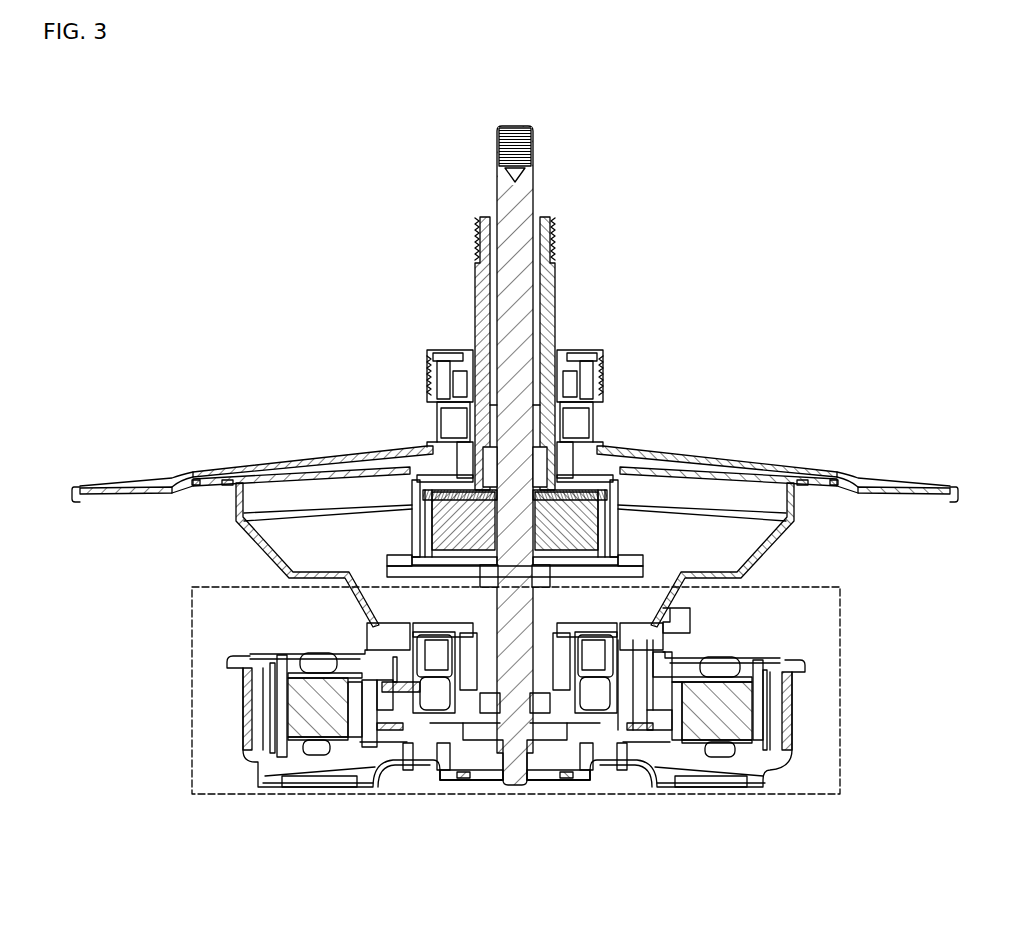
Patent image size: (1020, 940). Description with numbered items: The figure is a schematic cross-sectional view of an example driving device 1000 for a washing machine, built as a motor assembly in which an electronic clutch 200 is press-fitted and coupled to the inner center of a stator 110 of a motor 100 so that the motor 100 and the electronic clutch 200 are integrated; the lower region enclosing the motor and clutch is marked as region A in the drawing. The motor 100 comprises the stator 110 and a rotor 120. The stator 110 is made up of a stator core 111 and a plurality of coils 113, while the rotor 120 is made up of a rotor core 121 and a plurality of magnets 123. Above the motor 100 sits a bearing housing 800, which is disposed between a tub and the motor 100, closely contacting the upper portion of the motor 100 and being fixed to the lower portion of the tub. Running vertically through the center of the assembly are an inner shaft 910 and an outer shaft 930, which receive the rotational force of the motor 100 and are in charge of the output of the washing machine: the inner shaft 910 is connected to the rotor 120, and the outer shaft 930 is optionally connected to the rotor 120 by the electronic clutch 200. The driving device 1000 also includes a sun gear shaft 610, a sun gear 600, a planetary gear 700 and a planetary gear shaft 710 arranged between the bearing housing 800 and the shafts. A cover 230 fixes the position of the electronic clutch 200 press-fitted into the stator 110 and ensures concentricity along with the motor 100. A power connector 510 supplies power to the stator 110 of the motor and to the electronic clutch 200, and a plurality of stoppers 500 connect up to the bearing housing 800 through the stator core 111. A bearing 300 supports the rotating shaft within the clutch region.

The driving device 1000 is at (390, 148).
The inner shaft 910 is at (523, 203).
The outer shaft 930 is at (553, 294).
The sun gear 600 is at (557, 485).
The sun gear shaft 610 is at (279, 566).
The planetary gear 700 is at (507, 620).
The planetary gear shaft 710 is at (470, 575).
The bearing housing 800 is at (765, 554).
The stoppers 500 is at (637, 682).
The power connector 510 is at (687, 623).
The cover 230 is at (391, 692).
The bearing 300 is at (563, 713).
The electronic clutch 200 is at (593, 663).
The coils 113 is at (690, 730).
The stator core 111 is at (743, 740).
The stator 110 is at (750, 840).
The rotor core 121 is at (766, 770).
The magnets 123 is at (783, 740).
The rotor 120 is at (865, 840).
The motor 100 is at (823, 885).
The motor region A is at (192, 692).